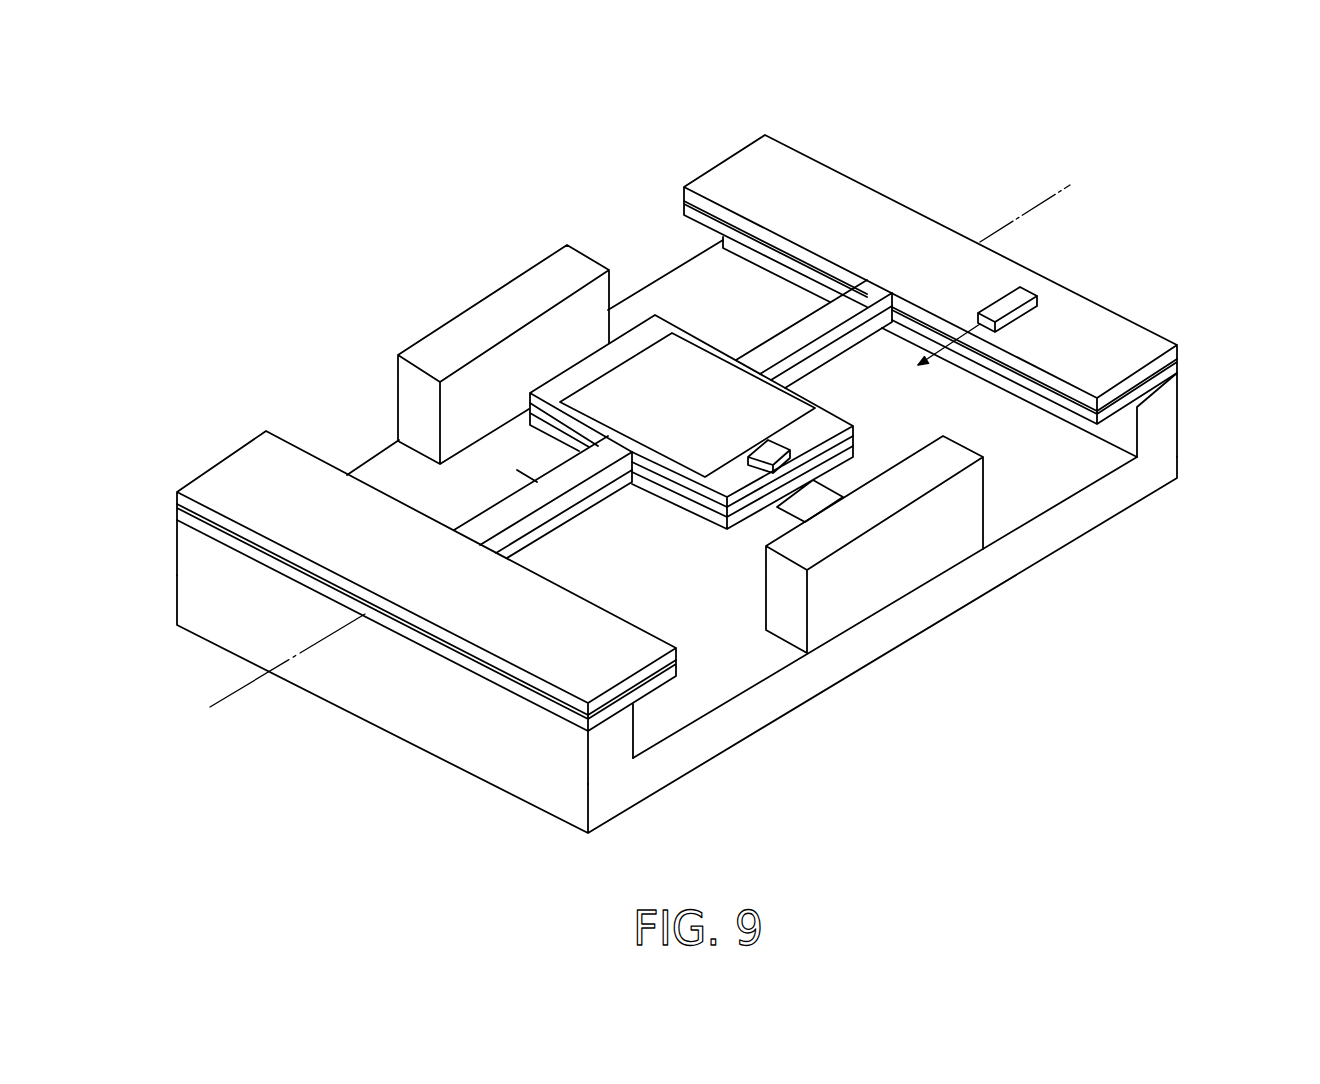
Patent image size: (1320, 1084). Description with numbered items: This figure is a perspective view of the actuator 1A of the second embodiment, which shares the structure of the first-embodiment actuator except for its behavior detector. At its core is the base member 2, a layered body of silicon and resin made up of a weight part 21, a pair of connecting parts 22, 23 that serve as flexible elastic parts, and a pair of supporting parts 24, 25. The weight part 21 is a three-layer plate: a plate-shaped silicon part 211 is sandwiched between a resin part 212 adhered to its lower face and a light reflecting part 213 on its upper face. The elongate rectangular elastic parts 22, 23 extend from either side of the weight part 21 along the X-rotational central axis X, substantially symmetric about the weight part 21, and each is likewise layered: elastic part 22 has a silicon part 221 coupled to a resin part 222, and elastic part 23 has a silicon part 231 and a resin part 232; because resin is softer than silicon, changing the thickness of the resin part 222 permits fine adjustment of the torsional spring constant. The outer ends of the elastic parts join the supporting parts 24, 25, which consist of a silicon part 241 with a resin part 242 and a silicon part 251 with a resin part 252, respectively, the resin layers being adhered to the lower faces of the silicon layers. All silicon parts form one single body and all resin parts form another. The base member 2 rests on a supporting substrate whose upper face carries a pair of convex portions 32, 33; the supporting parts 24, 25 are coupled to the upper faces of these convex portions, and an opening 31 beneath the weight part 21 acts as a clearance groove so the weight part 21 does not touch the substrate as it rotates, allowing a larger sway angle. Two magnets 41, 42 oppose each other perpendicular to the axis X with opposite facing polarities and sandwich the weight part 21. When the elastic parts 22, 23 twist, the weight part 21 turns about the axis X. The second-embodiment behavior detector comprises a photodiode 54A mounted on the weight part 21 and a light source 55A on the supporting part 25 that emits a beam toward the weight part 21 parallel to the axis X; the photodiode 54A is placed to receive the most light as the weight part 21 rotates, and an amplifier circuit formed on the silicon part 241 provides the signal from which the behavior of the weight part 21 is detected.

The actuator 1A is at (697, 472).
The base member 2 is at (697, 433).
The weight part 21 is at (575, 375).
The silicon part 211 is at (531, 419).
The resin part 212 is at (531, 430).
The light reflecting part 213 is at (625, 388).
The connecting part (elastic part) 22 is at (564, 525).
The silicon part 221 is at (532, 502).
The resin part 222 is at (569, 525).
The connecting part (elastic part) 23 is at (836, 362).
The silicon part 231 is at (820, 322).
The resin part 232 is at (843, 358).
The supporting part 24 is at (383, 552).
The silicon part 241 is at (176, 497).
The resin part 242 is at (200, 420).
The supporting part 25 is at (994, 279).
The silicon part 251 is at (1177, 347).
The resin part 252 is at (1168, 375).
The opening 31 is at (737, 562).
The convex portion 32 is at (610, 745).
The convex portion 33 is at (1160, 427).
The magnet 41 is at (930, 550).
The magnet 42 is at (550, 275).
The photodiode 54A is at (773, 458).
The light source 55A is at (1027, 317).
The X-rotational central axis X is at (955, 167).